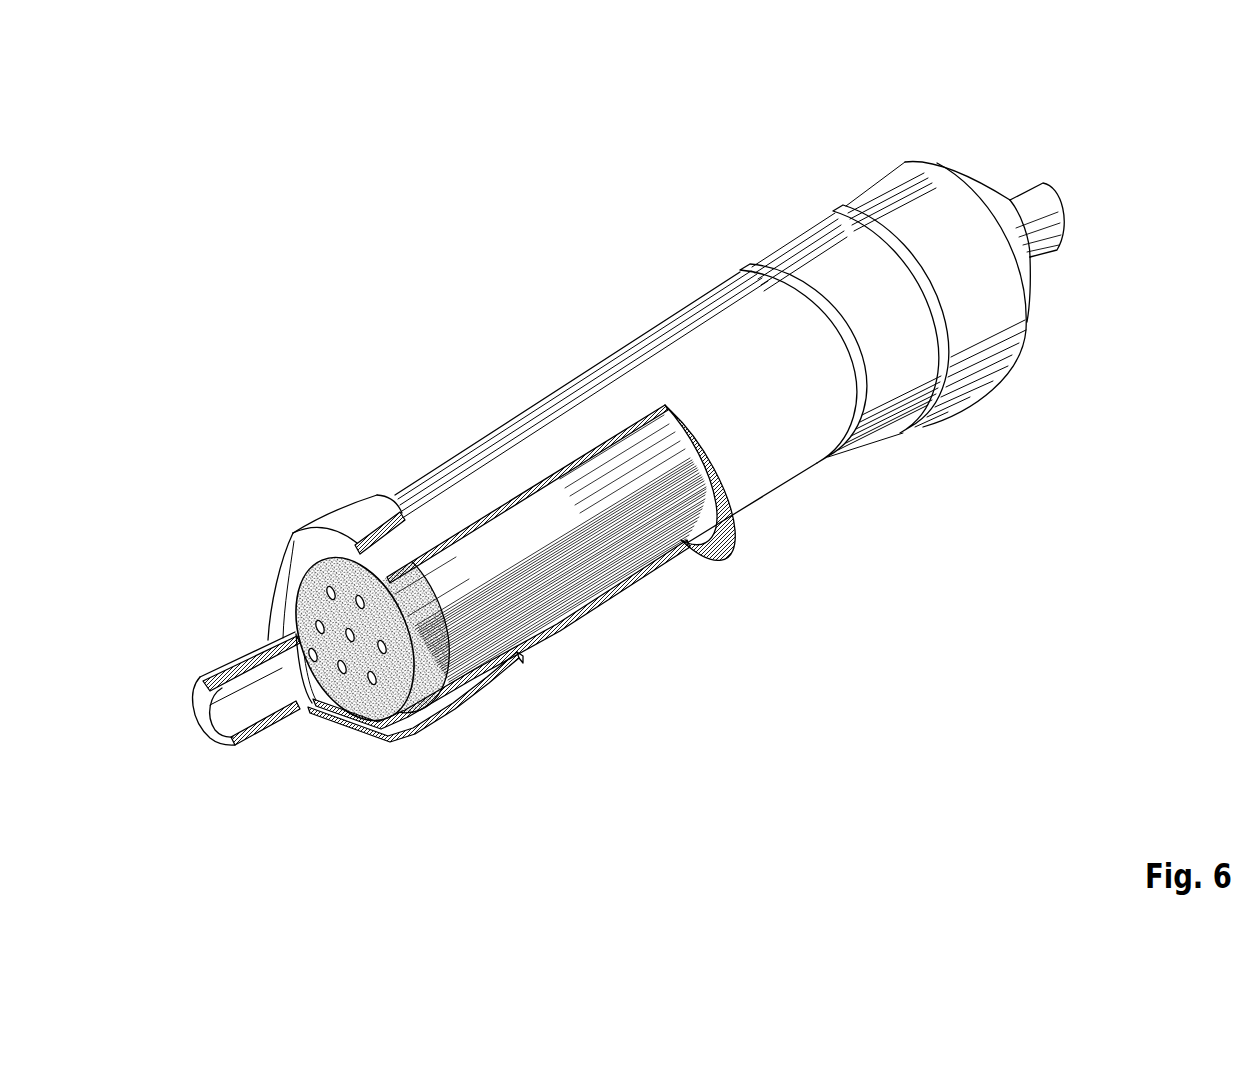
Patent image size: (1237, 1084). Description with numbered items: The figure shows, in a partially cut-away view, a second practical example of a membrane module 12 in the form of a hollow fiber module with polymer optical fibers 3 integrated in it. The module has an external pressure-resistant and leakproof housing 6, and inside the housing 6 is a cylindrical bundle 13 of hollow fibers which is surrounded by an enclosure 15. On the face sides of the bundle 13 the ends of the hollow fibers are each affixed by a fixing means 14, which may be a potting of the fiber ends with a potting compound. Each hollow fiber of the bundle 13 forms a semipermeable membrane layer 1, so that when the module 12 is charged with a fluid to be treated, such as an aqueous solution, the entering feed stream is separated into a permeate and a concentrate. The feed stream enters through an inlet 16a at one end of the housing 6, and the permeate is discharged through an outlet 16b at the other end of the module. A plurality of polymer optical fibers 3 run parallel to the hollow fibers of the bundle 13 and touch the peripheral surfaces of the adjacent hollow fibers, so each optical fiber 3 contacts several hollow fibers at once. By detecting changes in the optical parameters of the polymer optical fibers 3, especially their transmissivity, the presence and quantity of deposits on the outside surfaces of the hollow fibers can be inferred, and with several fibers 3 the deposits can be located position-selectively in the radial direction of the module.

The semipermeable membrane layer 1 is at (668, 510).
The polymer optical fibers 3 is at (370, 687).
The housing 6 is at (835, 257).
The membrane module 12 is at (317, 338).
The cylindrical bundle of hollow fibers 13 is at (570, 587).
The fixing means 14 is at (460, 693).
The enclosure 15 is at (610, 413).
The inlet 16a is at (233, 657).
The outlet 16b is at (1057, 205).